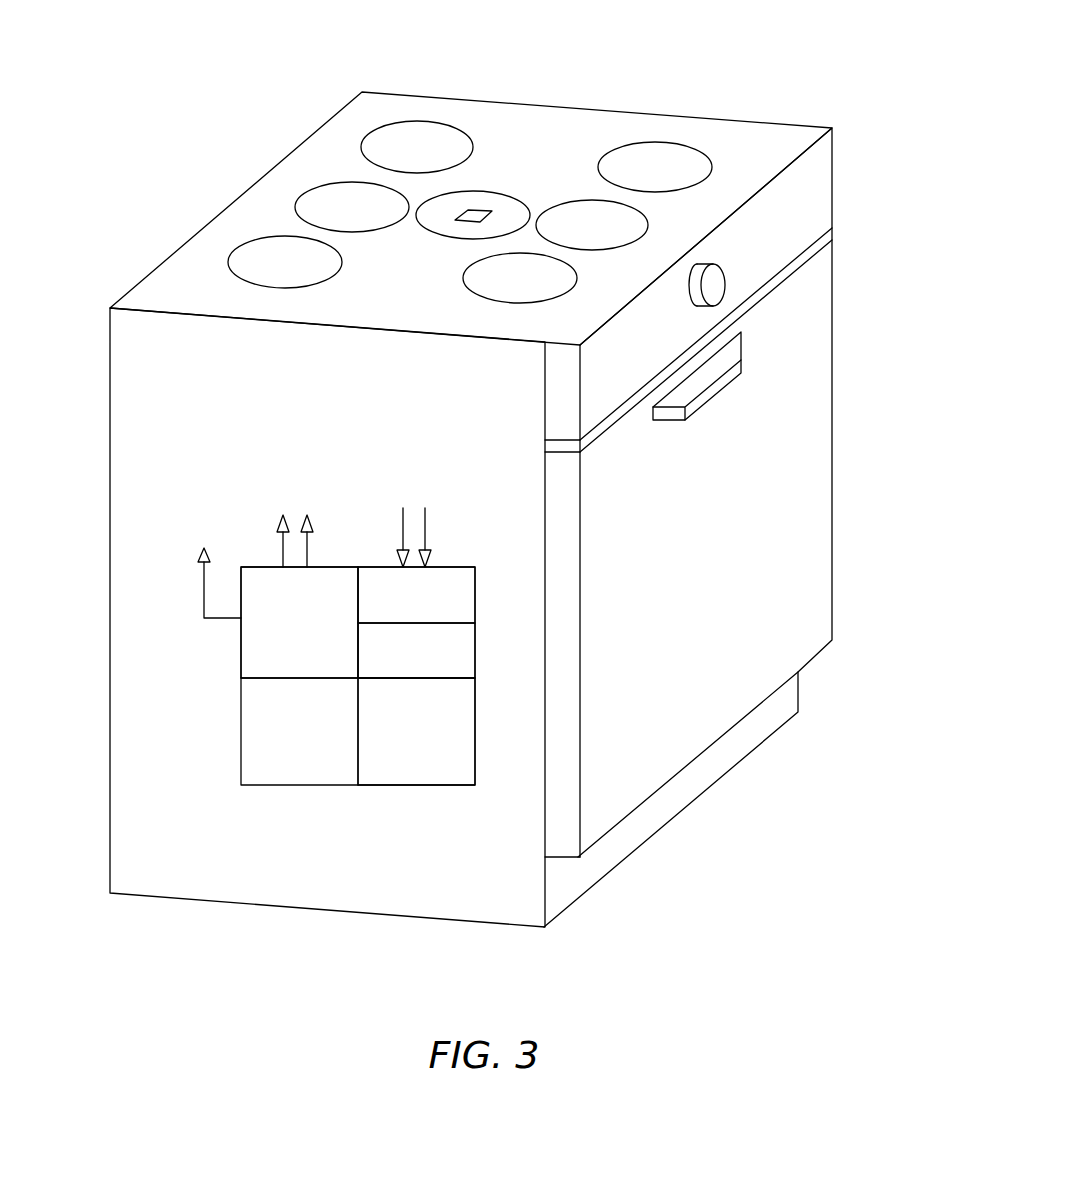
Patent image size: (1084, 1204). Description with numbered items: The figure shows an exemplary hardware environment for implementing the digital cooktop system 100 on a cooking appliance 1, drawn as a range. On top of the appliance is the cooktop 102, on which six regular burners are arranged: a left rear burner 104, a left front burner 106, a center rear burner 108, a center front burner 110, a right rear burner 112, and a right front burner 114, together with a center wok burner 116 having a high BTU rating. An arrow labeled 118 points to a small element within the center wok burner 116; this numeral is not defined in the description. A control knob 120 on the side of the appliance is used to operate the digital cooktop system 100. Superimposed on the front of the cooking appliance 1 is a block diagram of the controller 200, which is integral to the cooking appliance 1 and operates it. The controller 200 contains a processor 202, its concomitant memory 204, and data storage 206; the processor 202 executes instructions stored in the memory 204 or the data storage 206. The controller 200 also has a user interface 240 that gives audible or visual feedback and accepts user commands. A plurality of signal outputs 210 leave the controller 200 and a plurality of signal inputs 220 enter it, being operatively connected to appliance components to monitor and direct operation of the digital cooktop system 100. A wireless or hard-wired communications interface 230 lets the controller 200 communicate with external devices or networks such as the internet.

The cooking appliance 1 is at (109, 463).
The digital cooktop system 100 is at (842, 72).
The cooktop 102 is at (245, 230).
The left rear burner 104 is at (247, 262).
The left front burner 106 is at (512, 302).
The center rear burner 108 is at (353, 202).
The center front burner 110 is at (583, 237).
The right rear burner 112 is at (455, 125).
The right front burner 114 is at (678, 153).
The center wok burner 116 is at (507, 207).
The sensor 118 is at (465, 225).
The control knob 120 is at (725, 285).
The controller 200 is at (241, 730).
The processor 202 is at (393, 612).
The memory 204 is at (393, 661).
The data storage 206 is at (393, 752).
The signal outputs 210 is at (283, 550).
The signal inputs 220 is at (403, 535).
The communications interface 230 is at (204, 568).
The user interface 240 is at (281, 633).